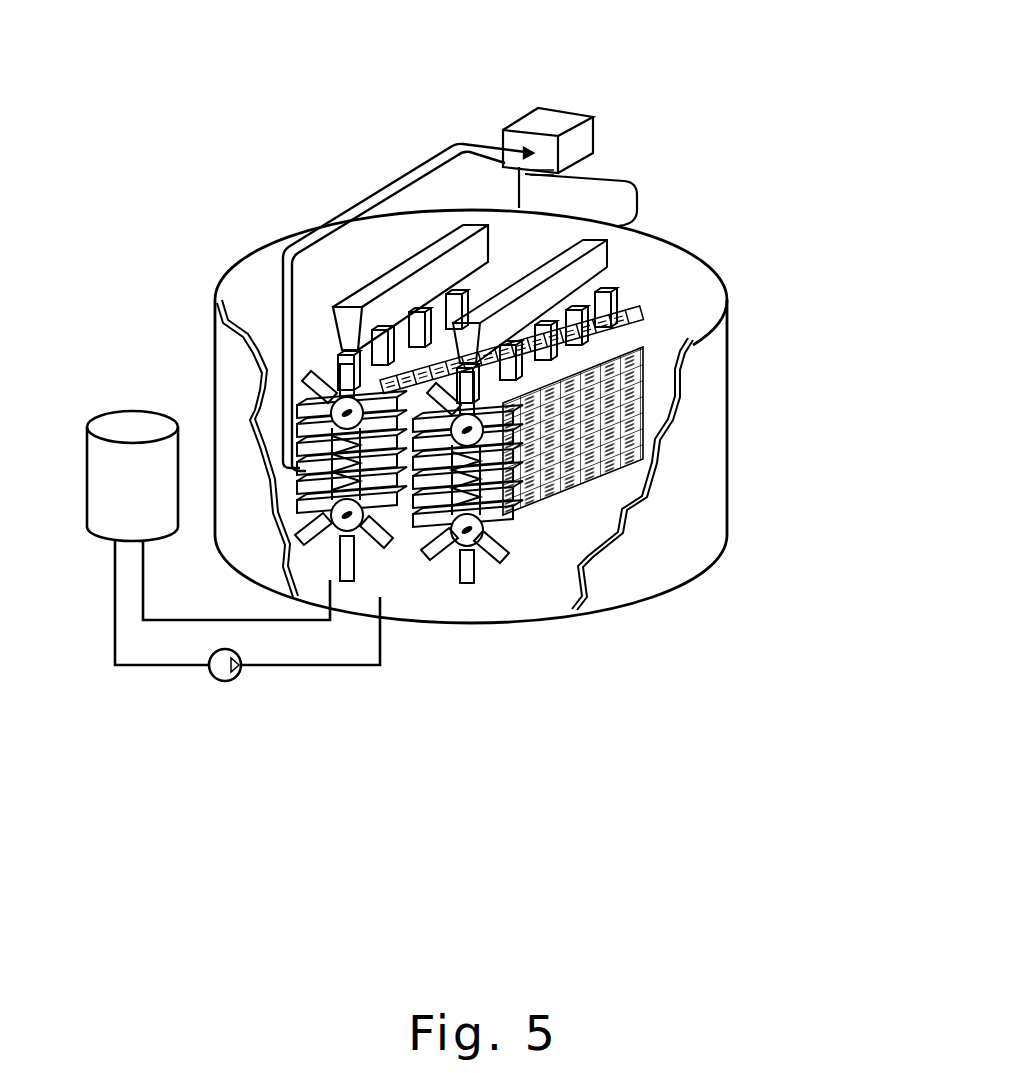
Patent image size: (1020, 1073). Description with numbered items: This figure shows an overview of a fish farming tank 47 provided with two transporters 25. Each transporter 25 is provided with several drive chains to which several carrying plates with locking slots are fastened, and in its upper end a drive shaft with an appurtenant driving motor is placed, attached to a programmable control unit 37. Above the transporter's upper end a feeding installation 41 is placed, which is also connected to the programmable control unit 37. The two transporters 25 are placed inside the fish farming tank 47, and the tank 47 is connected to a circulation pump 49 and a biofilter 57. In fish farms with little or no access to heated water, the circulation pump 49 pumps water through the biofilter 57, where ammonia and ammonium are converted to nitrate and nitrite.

The transporter 25 is at (493, 540).
The programmable control unit 37 is at (558, 124).
The feeding installation 41 is at (428, 260).
The fish farming tank 47 is at (700, 532).
The circulation pump 49 is at (225, 681).
The biofilter 57 is at (130, 477).